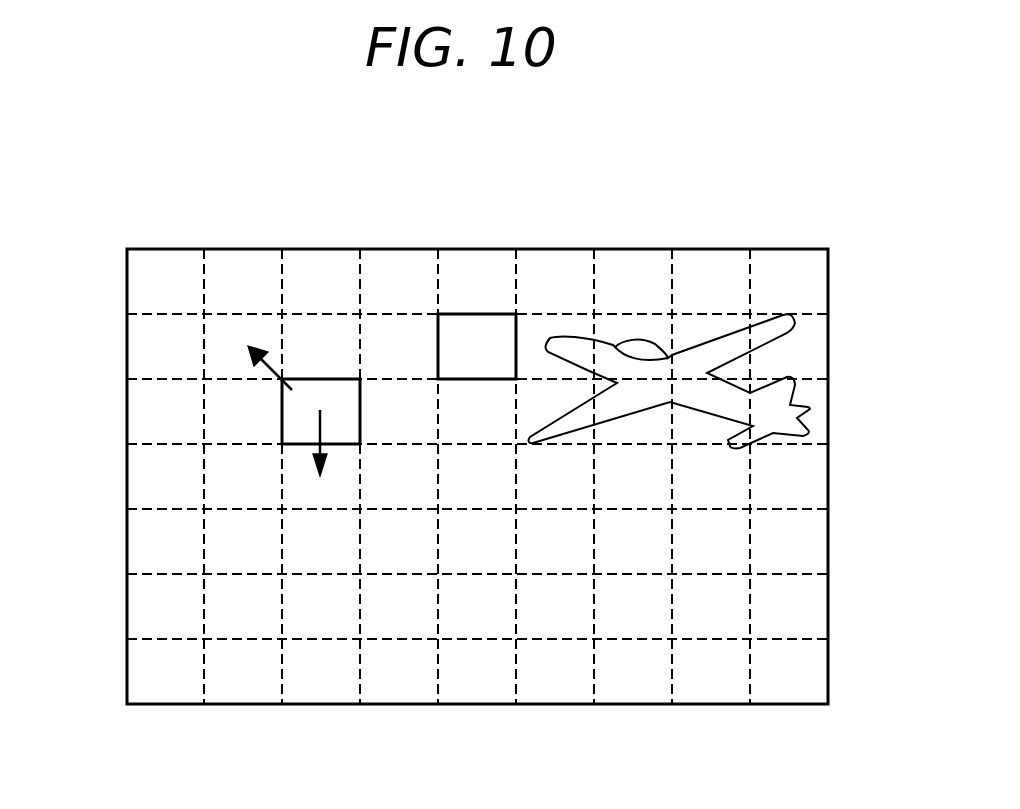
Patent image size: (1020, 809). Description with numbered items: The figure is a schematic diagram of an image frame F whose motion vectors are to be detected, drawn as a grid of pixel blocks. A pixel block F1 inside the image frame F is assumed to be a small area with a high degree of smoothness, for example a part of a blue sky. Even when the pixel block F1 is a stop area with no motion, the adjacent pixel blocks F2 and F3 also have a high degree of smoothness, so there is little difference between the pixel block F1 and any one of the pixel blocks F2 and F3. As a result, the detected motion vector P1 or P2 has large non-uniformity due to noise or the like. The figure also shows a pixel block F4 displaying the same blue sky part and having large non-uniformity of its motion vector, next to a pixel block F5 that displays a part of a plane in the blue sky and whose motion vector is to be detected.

The image frame F is at (828, 490).
The pixel block F1 is at (292, 425).
The pixel block F2 is at (382, 390).
The pixel block F3 is at (232, 432).
The pixel block F4 is at (481, 325).
The pixel block F5 is at (558, 327).
The motion vector P1 is at (270, 369).
The motion vector P2 is at (330, 450).